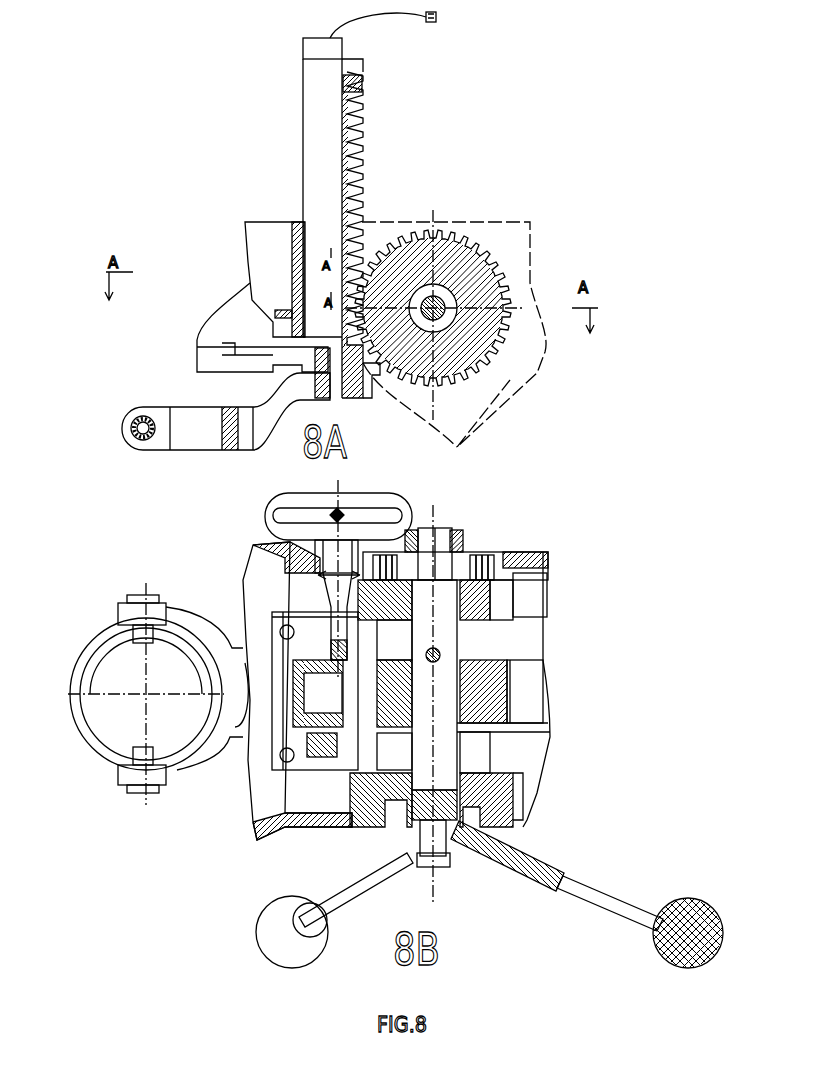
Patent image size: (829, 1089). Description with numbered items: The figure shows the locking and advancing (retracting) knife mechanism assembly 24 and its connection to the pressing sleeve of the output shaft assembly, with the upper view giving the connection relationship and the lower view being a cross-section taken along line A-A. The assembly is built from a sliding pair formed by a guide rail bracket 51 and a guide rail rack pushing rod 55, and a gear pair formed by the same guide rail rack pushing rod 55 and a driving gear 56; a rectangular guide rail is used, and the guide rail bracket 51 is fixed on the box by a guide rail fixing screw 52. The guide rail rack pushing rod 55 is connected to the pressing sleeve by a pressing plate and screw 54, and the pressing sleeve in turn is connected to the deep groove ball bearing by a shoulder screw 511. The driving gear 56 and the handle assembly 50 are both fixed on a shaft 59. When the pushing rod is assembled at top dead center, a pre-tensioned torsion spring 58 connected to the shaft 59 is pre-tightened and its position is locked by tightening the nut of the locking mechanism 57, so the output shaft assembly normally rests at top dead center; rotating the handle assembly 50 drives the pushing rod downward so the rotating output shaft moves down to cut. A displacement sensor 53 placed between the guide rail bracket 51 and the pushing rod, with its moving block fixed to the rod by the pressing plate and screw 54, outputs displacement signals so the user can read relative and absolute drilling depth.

In FIG. 8a, the locking and advancing (retracting) knife mechanism assembly 24 is at (256, 90).
In FIG. 8b, the handle assembly 50 is at (497, 828).
In FIG. 8a, the guide rail bracket 51 is at (273, 328).
In FIG. 8a, the guide rail fixing screw 52 is at (285, 318).
In FIG. 8a, the displacement sensor 53 is at (313, 163).
In FIG. 8a, the pressing plate and screw 54 is at (447, 128).
In FIG. 8a, the guide rail rack pushing rod 55 is at (363, 203).
In FIG. 8a, the driving gear 56 is at (477, 253).
In FIG. 8b, the locking mechanism 57 is at (353, 500).
In FIG. 8b, the pre-tensioned torsion spring 58 is at (493, 553).
In FIG. 8b, the shaft 59 is at (453, 667).
In FIG. 8b, the shoulder screw 511 is at (142, 793).